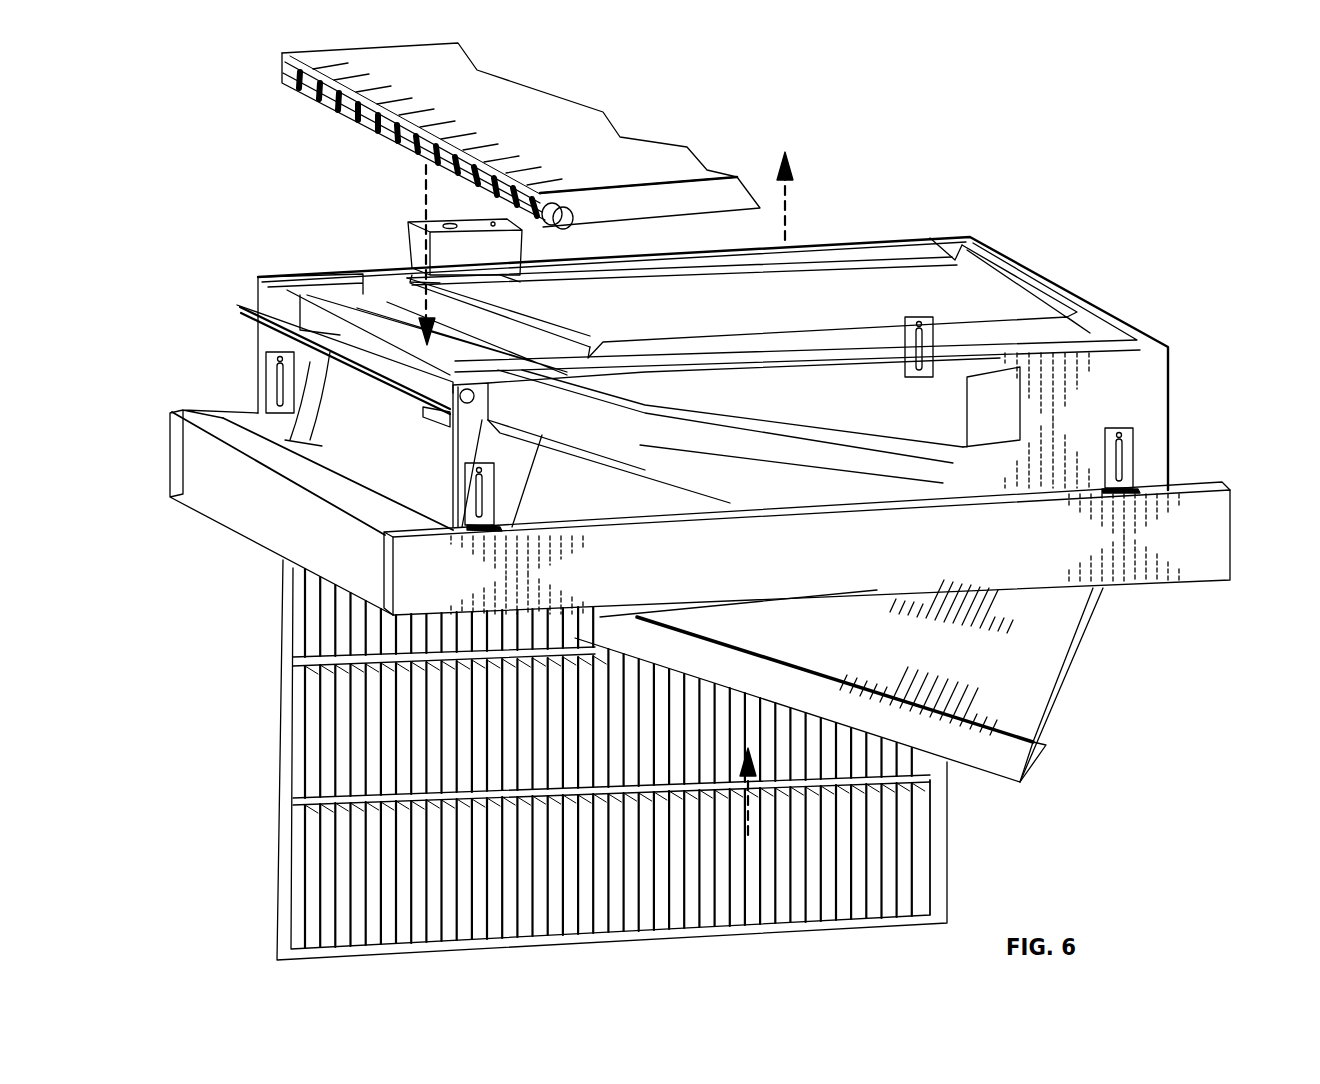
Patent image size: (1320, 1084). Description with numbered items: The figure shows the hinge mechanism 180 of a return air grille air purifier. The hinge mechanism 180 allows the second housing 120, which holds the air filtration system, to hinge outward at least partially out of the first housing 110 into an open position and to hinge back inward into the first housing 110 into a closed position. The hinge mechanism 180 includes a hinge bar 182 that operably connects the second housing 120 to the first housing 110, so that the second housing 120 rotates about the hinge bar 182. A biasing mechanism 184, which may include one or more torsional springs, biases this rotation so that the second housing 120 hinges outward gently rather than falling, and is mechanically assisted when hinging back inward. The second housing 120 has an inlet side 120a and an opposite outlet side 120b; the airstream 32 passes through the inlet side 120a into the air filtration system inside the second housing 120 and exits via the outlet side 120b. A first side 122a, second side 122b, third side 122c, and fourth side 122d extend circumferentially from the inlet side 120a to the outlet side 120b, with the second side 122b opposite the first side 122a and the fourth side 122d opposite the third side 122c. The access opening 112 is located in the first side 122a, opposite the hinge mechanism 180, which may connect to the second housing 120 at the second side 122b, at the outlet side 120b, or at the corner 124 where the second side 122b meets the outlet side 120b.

The airstream 32 is at (786, 224).
The first housing 110 is at (1147, 378).
The access opening 112 is at (1070, 653).
The second housing 120 is at (1037, 622).
The inlet side 120a is at (898, 762).
The outlet side 120b is at (813, 493).
The first side 122a is at (1047, 738).
The second side 122b is at (373, 460).
The third side 122c is at (770, 642).
The fourth side 122d is at (322, 385).
The corner 124 is at (318, 314).
The hinge mechanism 180 is at (493, 396).
The hinge bar 182 is at (542, 228).
The biasing mechanism 184 is at (372, 122).